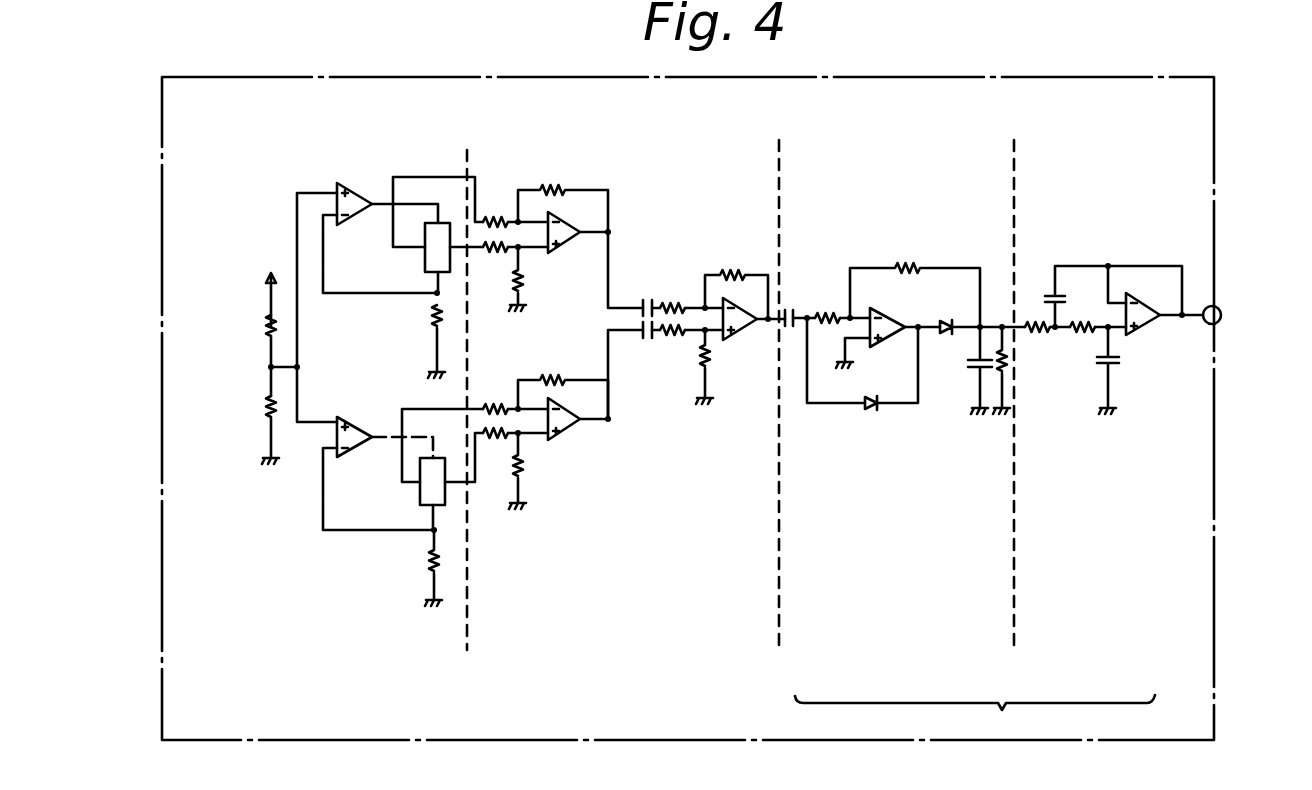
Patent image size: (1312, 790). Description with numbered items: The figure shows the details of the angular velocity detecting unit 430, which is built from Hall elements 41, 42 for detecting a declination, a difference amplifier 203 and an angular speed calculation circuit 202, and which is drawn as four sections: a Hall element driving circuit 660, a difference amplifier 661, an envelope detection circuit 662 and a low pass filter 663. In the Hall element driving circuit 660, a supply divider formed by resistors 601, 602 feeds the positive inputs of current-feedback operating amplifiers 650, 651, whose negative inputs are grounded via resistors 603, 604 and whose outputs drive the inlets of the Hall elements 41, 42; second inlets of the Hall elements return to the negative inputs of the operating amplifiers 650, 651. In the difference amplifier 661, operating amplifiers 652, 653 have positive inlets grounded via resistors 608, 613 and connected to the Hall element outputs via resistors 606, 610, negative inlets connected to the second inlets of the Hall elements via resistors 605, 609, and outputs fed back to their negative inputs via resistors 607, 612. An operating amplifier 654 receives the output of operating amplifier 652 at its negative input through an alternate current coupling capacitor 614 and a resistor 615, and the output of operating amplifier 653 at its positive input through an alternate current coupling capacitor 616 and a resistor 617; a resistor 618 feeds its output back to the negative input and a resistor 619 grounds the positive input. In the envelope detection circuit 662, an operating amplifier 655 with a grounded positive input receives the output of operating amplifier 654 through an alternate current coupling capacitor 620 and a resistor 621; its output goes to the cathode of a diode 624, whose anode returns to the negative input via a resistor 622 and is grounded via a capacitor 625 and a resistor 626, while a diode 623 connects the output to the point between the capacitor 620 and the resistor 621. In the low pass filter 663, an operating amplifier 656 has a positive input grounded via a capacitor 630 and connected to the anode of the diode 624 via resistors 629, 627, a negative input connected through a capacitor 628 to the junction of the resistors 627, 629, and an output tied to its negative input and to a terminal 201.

The angular velocity detecting unit 430 is at (918, 63).
The Hall element driving circuit 660 is at (272, 552).
The difference amplifier 661 is at (566, 548).
The difference amplifier 203 is at (628, 428).
The envelope detection circuit 662 is at (832, 530).
The low pass filter 663 is at (1053, 525).
The angular speed calculation circuit 202 is at (996, 472).
The terminal 201 is at (1246, 312).
The Hall element 41 is at (425, 258).
The Hall element 42 is at (420, 492).
The resistor 601 is at (268, 326).
The resistor 602 is at (268, 408).
The resistor 603 is at (435, 319).
The resistor 604 is at (432, 561).
The resistor 605 is at (500, 218).
The resistor 606 is at (498, 251).
The resistor 607 is at (556, 189).
The resistor 608 is at (521, 283).
The resistor 609 is at (498, 407).
The resistor 610 is at (497, 440).
The resistor 612 is at (556, 379).
The resistor 613 is at (522, 470).
The alternate current coupling capacitor 614 is at (645, 297).
The resistor 615 is at (672, 305).
The alternate current coupling capacitor 616 is at (647, 341).
The resistor 617 is at (682, 338).
The resistor 618 is at (735, 272).
The resistor 619 is at (700, 381).
The alternate current coupling capacitor 620 is at (789, 306).
The resistor 621 is at (825, 308).
The resistor 622 is at (905, 265).
The diode 623 is at (871, 411).
The diode 624 is at (946, 321).
The capacitor 625 is at (978, 368).
The resistor 626 is at (1086, 333).
The resistor 627 is at (1027, 322).
The capacitor 628 is at (1058, 295).
The resistor 629 is at (1085, 375).
The capacitor 630 is at (1115, 357).
The operating amplifier 650 is at (355, 187).
The operating amplifier 651 is at (355, 418).
The operating amplifier 652 is at (570, 250).
The operating amplifier 653 is at (565, 441).
The operating amplifier 654 is at (738, 341).
The operating amplifier 655 is at (893, 320).
The operating amplifier 656 is at (1140, 305).